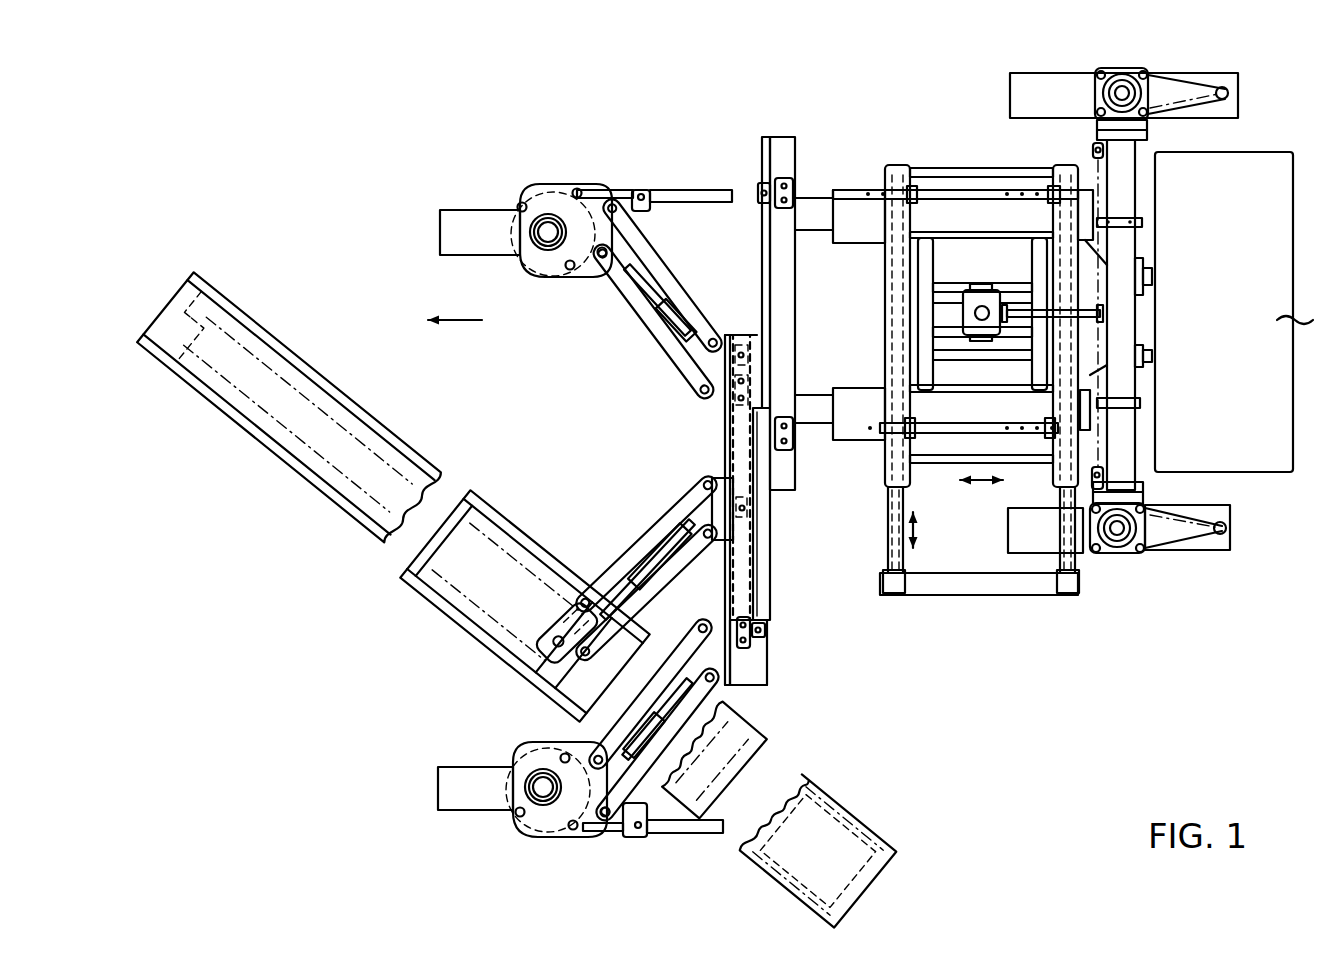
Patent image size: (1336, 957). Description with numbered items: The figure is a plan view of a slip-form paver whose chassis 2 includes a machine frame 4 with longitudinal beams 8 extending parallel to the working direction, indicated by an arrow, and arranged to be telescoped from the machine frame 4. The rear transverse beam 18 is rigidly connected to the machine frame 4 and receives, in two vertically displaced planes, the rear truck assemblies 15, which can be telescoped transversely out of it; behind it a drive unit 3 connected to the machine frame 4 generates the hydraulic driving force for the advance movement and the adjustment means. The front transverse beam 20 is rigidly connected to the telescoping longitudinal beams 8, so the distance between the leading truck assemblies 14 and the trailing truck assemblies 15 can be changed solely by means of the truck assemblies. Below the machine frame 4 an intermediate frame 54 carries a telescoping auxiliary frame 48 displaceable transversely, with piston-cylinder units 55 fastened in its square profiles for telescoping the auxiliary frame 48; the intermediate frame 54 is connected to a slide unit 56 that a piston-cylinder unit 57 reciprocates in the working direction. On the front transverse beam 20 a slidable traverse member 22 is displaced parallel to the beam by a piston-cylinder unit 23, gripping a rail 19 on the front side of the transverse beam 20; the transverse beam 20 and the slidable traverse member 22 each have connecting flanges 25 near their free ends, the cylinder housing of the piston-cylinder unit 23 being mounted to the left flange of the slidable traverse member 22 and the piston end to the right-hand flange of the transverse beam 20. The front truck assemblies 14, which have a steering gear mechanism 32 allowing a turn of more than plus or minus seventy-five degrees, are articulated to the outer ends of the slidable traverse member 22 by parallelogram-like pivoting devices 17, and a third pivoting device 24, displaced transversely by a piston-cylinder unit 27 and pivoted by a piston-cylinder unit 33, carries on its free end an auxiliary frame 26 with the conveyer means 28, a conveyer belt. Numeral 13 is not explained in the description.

The chassis 2 is at (985, 348).
The drive unit 3 is at (1294, 303).
The machine frame 4 is at (855, 189).
The longitudinal beams 8 is at (810, 224).
The lever arm 13 is at (668, 312).
The front truck assemblies 14 is at (487, 199).
The rear truck assemblies 15 is at (1250, 84).
The pivoting device 17 is at (647, 339).
The rear transverse beam 18 is at (1128, 250).
The rail 19 is at (762, 160).
The front transverse beam 20 is at (782, 137).
The slidable traverse member 22 is at (753, 553).
The piston-cylinder unit 23 is at (761, 598).
The pivoting device 24 is at (668, 503).
The connecting flange 25 is at (787, 190).
The auxiliary frame 26 is at (443, 613).
The piston-cylinder unit 27 is at (722, 440).
The conveyer means 28 is at (541, 522).
The steering gear mechanism 32 is at (622, 180).
The piston-cylinder unit 33 is at (662, 556).
The auxiliary frame 48 is at (888, 552).
The intermediate frame 54 is at (885, 487).
The piston-cylinder units 55 is at (884, 345).
The slide unit 56 is at (922, 267).
The piston-cylinder unit 57 is at (1100, 312).